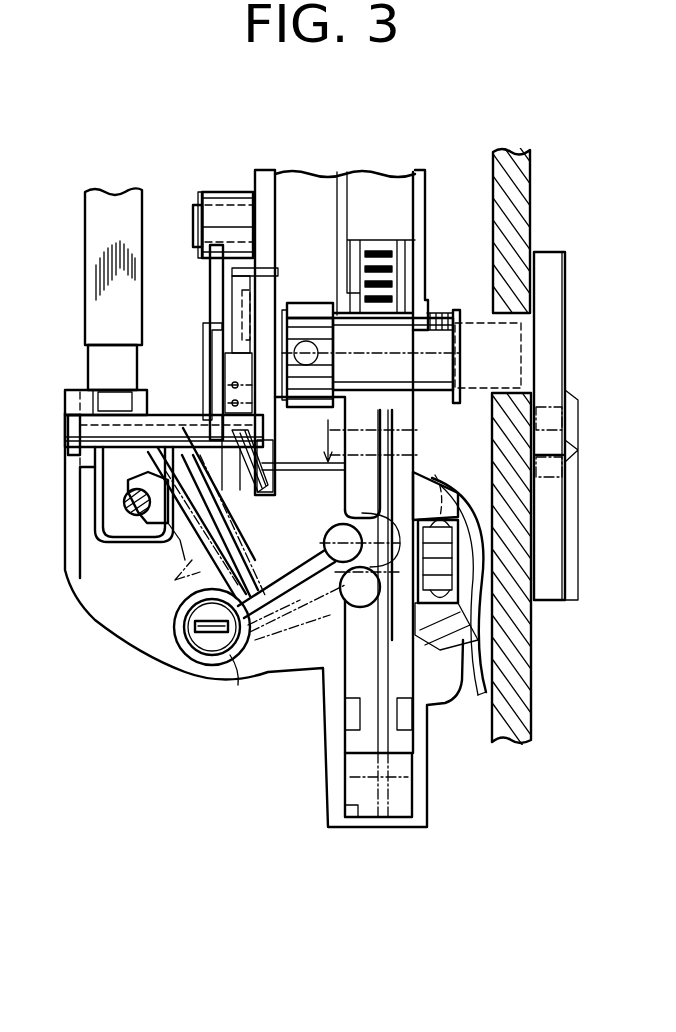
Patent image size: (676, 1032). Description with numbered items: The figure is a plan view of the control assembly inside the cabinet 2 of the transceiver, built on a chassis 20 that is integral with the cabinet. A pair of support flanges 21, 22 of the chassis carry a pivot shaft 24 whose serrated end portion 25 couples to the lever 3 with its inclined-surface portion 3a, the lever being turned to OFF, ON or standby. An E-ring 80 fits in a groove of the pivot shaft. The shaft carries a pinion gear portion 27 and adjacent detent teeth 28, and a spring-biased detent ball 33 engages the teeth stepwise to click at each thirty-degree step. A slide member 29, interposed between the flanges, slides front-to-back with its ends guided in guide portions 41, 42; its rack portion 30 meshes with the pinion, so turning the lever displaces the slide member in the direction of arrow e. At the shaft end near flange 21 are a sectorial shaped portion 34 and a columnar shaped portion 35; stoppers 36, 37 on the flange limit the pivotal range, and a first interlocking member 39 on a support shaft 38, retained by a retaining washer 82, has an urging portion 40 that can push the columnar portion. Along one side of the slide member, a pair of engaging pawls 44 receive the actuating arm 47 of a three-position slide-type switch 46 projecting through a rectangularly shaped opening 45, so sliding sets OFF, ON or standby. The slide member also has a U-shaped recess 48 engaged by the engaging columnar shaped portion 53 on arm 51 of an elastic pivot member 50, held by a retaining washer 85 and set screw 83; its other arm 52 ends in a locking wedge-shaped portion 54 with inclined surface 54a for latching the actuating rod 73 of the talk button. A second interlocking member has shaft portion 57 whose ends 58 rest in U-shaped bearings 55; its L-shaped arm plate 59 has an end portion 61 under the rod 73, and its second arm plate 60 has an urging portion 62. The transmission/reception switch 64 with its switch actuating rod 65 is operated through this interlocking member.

The cabinet 2 is at (515, 178).
The lever 3 is at (565, 508).
The portion having an inclined surface 3a is at (578, 552).
The chassis 20 is at (88, 598).
The support flange 21 is at (266, 172).
The support flange 22 is at (421, 172).
The pivot shaft 24 is at (440, 318).
The serrated end portion 25 is at (462, 320).
The pinion gear portion 27 is at (386, 382).
The detent teeth 28 is at (319, 303).
The slide member 29 is at (358, 485).
The rack portion 30 is at (400, 258).
The detent ball 33 is at (318, 352).
The sectorial shaped portion 34 is at (228, 403).
The columnar shaped portion 35 is at (235, 333).
The stopper 36 is at (290, 320).
The stopper 37 is at (250, 440).
The support shaft 38 is at (193, 224).
The first interlocking member 39 is at (225, 192).
The urging portion 40 is at (226, 283).
The guide portion 41 is at (384, 185).
The guide portion 42 is at (352, 795).
The engaging pawls 44 is at (438, 472).
The rectangularly shaped opening 45 is at (460, 585).
The three-position slide-type switch 46 is at (466, 500).
The actuating arm 47 is at (480, 692).
The U-shaped recess 48 is at (326, 540).
The pivot member 50 is at (175, 618).
The arm 51 is at (255, 605).
The arm 52 is at (178, 580).
The engaging columnar shaped portion 53 is at (340, 560).
The locking wedge-shaped portion 54 is at (150, 462).
The inclined surface 54a is at (170, 527).
The U-shaped bearings 55 is at (68, 422).
The shaft portion 57 is at (199, 523).
The ends 58 is at (72, 445).
The first L-shaped arm plate 59 is at (95, 493).
The second arm plate 60 is at (222, 393).
The end portion 61 is at (110, 512).
The urging portion 62 is at (208, 368).
The transmission/reception switch 64 is at (85, 222).
The switch actuating rod 65 is at (76, 392).
The actuating rod 73 is at (128, 512).
The E-ring 80 is at (488, 325).
The retaining washer 82 is at (200, 196).
The set screw 83 is at (200, 640).
The retaining washer 85 is at (243, 684).